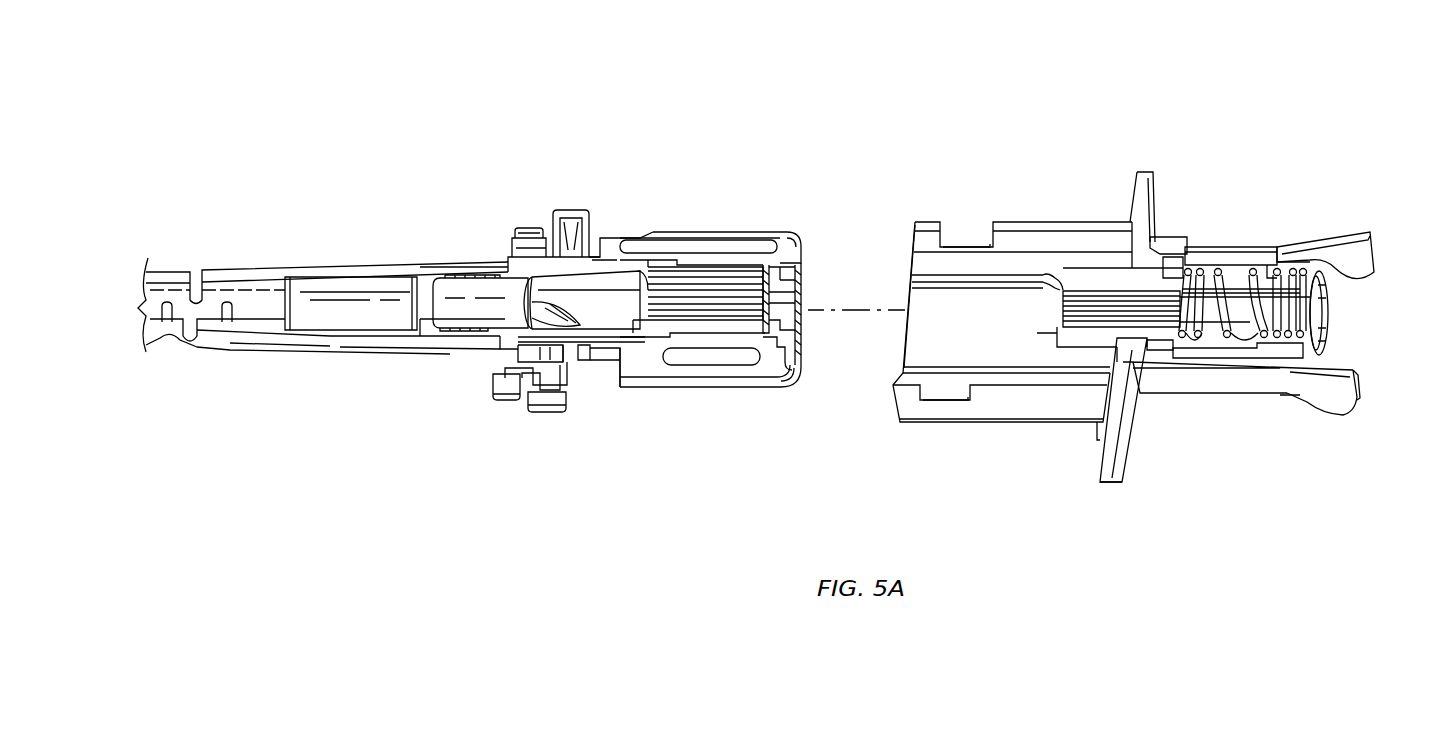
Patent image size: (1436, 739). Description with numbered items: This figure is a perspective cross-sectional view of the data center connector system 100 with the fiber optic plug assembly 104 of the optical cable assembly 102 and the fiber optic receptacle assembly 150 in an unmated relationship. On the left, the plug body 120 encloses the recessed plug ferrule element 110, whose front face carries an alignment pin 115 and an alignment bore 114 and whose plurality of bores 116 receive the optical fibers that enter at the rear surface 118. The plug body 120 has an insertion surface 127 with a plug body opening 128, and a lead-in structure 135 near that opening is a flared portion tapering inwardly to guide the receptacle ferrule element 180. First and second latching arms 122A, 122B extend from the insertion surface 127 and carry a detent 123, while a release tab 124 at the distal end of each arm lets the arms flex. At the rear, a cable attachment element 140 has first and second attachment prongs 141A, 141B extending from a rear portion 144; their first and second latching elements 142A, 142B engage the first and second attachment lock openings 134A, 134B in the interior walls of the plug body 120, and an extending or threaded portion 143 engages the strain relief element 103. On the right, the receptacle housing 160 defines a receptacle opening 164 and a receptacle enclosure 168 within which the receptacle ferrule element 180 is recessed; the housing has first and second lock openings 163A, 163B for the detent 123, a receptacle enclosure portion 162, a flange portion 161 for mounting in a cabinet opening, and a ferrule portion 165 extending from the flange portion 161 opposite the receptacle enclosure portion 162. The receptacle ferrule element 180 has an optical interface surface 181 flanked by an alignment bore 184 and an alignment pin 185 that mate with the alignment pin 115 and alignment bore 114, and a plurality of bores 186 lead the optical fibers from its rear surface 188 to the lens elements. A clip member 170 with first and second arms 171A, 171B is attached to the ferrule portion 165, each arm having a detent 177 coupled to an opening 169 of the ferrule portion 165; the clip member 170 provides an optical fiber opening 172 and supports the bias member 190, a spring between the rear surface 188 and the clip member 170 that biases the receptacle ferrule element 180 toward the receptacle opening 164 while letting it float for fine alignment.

The data center connector system 100 is at (738, 184).
The optical cable assembly 102 is at (456, 240).
The strain relief element 103 is at (323, 280).
The fiber optic plug assembly 104 is at (741, 263).
The plug ferrule element 110 is at (688, 385).
The alignment bore 114 is at (805, 270).
The alignment pin 115 is at (792, 330).
The plurality of bores 116 is at (699, 244).
The rear surface 118 is at (640, 322).
The plug body 120 is at (700, 197).
The first latching arm 122A is at (705, 407).
The second latching arm 122B is at (691, 204).
The detent 123 is at (642, 232).
The release tab 124 is at (568, 225).
The insertion surface 127 is at (790, 242).
The plug body opening 128 is at (825, 285).
The first attachment lock opening 134A is at (598, 360).
The second attachment lock opening 134B is at (603, 218).
The lead-in structure 135 is at (780, 302).
The cable attachment element 140 is at (543, 281).
The first attachment prong 141A is at (516, 366).
The second attachment prong 141B is at (517, 217).
The first latching element 142A is at (582, 360).
The second latching element 142B is at (574, 197).
The extending or threaded portion 143 is at (455, 269).
The rear portion 144 is at (497, 397).
The fiber optic receptacle assembly 150 is at (1175, 76).
The receptacle housing 160 is at (1012, 278).
The flange portion 161 is at (1125, 462).
The receptacle enclosure portion 162 is at (1018, 422).
The first lock opening 163A is at (917, 432).
The second lock opening 163B is at (983, 207).
The receptacle opening 164 is at (888, 277).
The ferrule portion 165 is at (1250, 250).
The receptacle enclosure 168 is at (982, 327).
The opening 169 is at (1238, 303).
The clip member 170 is at (1332, 263).
The first arm 171A is at (1360, 416).
The second arm 171B is at (1377, 242).
The optical fiber opening 172 is at (1318, 310).
The detent 177 is at (1172, 268).
The receptacle ferrule element 180 is at (1177, 226).
The optical interface surface 181 is at (1063, 305).
The alignment bore 184 is at (1037, 335).
The alignment pin 185 is at (1052, 275).
The plurality of bores 186 is at (1228, 373).
The rear surface 188 is at (1185, 290).
The bias member 190 is at (1287, 263).